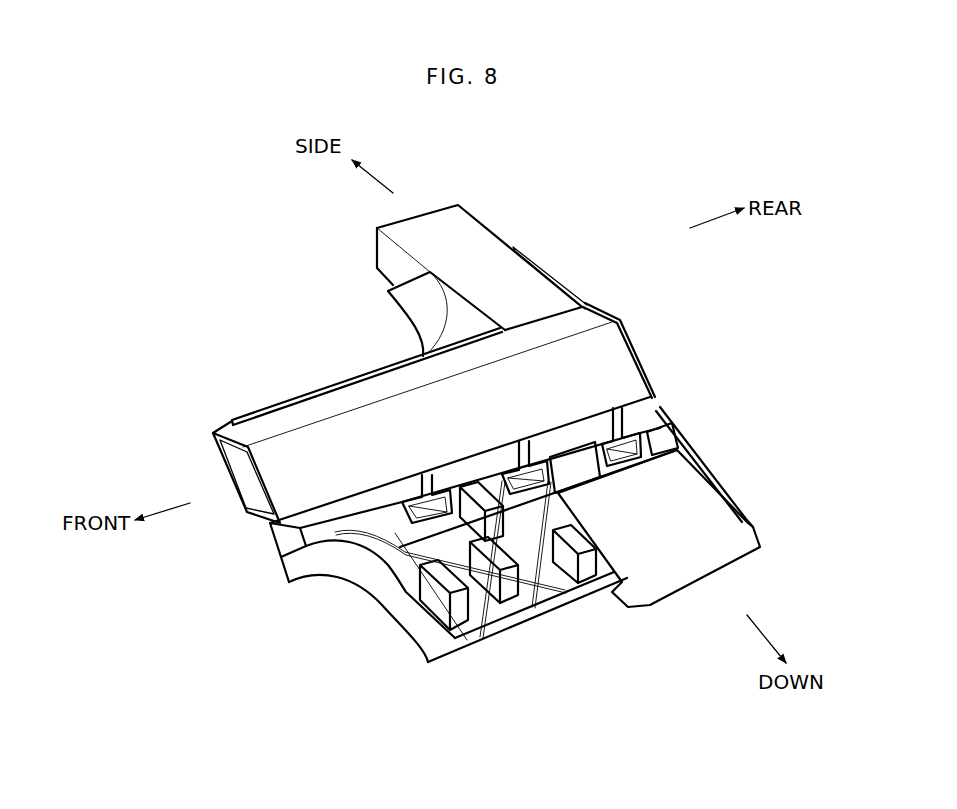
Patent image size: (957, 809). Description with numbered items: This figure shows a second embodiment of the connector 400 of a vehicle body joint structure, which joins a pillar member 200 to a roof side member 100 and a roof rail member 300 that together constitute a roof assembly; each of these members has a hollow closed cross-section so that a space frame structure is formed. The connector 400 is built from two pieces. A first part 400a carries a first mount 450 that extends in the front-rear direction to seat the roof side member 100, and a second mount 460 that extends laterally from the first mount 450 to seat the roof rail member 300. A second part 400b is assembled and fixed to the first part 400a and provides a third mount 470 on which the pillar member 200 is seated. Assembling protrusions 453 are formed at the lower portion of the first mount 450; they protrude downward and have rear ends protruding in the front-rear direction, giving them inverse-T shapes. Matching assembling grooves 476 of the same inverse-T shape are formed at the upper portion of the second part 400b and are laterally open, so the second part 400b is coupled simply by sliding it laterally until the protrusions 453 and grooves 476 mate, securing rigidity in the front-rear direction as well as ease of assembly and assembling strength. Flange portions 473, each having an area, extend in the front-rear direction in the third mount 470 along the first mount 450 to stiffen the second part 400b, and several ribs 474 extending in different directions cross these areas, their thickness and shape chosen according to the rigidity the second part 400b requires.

The roof side member 100 is at (355, 398).
The pillar member 200 is at (737, 543).
The roof rail member 300 is at (478, 233).
The connector 400 is at (561, 482).
The first part 400a is at (663, 402).
The second part 400b is at (673, 417).
The first mount 450 is at (325, 517).
The assembling protrusions 453 is at (437, 505).
The second mount 460 is at (550, 275).
The third mount 470 is at (718, 483).
The flange portions 473 is at (512, 585).
The ribs 474 is at (578, 583).
The assembling grooves 476 is at (505, 522).